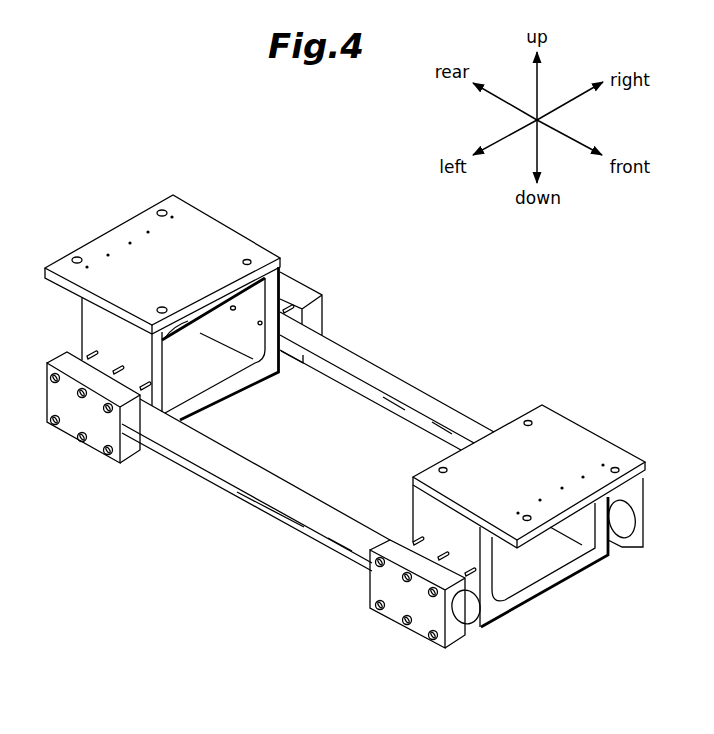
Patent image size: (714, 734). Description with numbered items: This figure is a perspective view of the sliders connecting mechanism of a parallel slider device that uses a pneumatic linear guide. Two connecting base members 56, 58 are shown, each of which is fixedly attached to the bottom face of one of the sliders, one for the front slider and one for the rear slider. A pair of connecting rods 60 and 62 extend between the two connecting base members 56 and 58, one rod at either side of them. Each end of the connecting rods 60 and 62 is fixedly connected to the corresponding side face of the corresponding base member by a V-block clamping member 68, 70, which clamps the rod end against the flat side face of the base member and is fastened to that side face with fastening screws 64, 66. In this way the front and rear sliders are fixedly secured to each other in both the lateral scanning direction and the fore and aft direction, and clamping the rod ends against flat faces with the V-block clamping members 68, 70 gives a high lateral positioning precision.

The connecting base member 56 is at (560, 440).
The connecting base member 58 is at (205, 232).
The connecting rod 60 is at (247, 472).
The connecting rod 62 is at (393, 380).
The fastening screws 64 is at (380, 610).
The fastening screws 66 is at (55, 425).
The V-block clamping member 68 is at (455, 632).
The V-block clamping member 70 is at (312, 306).